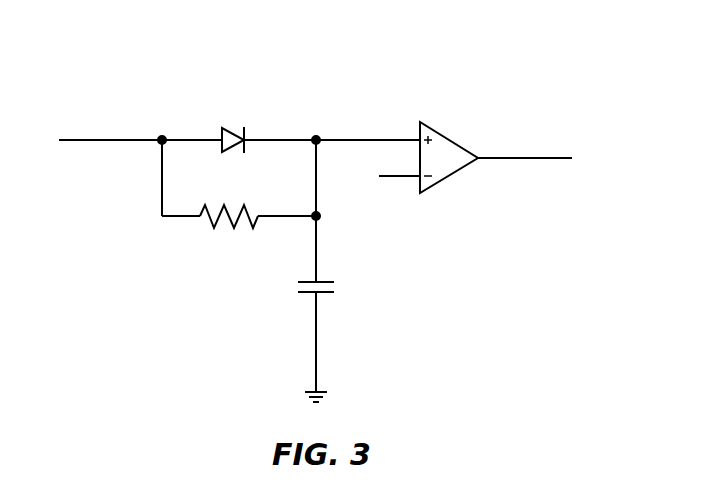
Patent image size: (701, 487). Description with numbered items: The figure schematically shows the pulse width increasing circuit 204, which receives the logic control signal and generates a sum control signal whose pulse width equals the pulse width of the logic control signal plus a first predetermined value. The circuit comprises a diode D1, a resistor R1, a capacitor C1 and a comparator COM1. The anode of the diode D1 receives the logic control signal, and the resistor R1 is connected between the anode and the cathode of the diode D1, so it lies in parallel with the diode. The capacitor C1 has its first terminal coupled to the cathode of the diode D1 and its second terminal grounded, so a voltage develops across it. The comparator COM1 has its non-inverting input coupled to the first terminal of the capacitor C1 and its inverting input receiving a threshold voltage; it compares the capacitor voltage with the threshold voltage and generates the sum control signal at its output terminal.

The pulse width increasing circuit 204 is at (532, 60).
The diode D1 is at (233, 128).
The resistor R1 is at (239, 233).
The capacitor C1 is at (336, 287).
The comparator COM1 is at (432, 160).